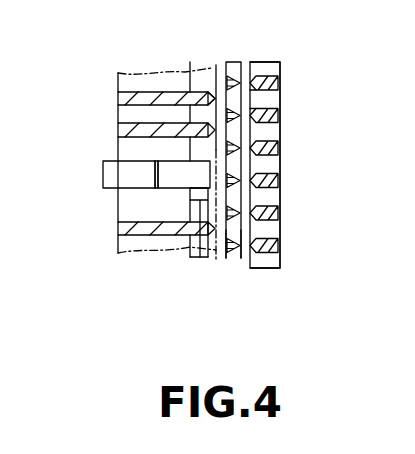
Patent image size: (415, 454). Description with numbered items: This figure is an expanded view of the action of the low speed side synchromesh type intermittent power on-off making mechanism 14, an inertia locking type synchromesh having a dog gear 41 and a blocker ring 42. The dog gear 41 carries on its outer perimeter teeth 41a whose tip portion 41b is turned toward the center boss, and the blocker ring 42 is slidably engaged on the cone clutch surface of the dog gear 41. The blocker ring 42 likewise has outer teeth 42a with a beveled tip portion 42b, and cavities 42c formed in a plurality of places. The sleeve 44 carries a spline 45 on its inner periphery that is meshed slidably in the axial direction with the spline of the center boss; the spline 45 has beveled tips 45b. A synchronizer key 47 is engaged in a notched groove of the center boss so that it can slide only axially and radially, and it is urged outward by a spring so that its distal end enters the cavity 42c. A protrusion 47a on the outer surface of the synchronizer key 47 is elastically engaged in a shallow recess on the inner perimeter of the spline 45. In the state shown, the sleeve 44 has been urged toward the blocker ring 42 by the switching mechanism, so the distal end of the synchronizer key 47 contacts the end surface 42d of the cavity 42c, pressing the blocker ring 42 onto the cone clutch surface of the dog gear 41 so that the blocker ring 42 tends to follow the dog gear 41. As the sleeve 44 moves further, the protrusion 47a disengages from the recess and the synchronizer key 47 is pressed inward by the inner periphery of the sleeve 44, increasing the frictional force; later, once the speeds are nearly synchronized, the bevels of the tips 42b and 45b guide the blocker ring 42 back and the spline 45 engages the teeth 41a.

The low speed side synchromesh type intermittent power on-off making mechanism 14 is at (300, 257).
The dog gear 41 is at (311, 148).
The teeth 41a is at (270, 84).
The tip portion 41b is at (278, 99).
The blocker ring 42 is at (232, 62).
The teeth 42a is at (241, 258).
The tip portion 42b is at (228, 258).
The cavities 42c is at (200, 205).
The end surface 42d is at (187, 258).
The sleeve 44 is at (122, 72).
The spline 45 is at (117, 99).
The tips 45b is at (212, 100).
The synchronizer key 47 is at (103, 176).
The protrusion 47a is at (152, 175).